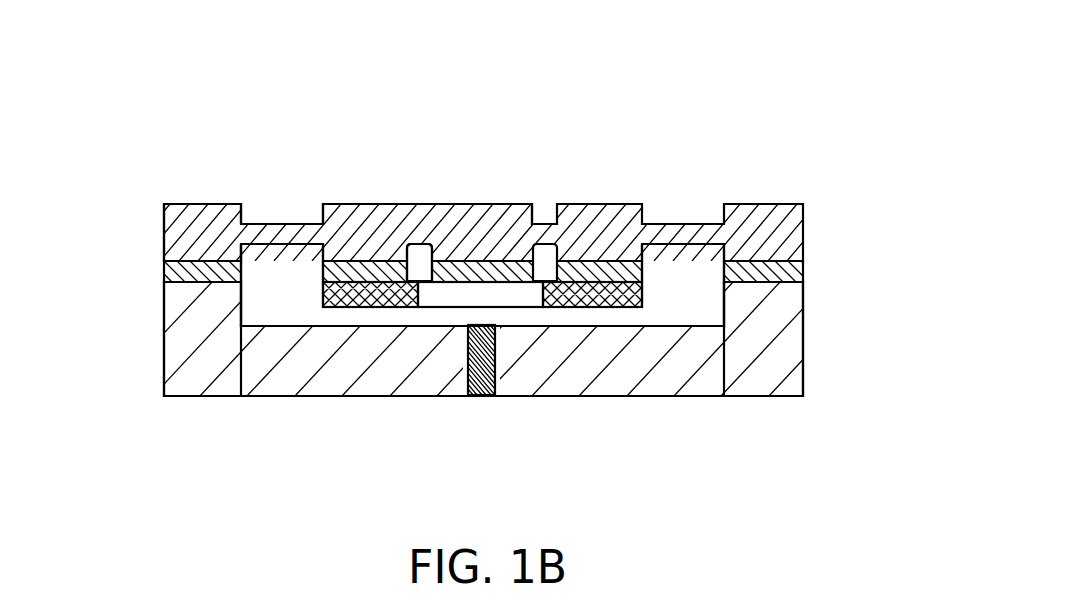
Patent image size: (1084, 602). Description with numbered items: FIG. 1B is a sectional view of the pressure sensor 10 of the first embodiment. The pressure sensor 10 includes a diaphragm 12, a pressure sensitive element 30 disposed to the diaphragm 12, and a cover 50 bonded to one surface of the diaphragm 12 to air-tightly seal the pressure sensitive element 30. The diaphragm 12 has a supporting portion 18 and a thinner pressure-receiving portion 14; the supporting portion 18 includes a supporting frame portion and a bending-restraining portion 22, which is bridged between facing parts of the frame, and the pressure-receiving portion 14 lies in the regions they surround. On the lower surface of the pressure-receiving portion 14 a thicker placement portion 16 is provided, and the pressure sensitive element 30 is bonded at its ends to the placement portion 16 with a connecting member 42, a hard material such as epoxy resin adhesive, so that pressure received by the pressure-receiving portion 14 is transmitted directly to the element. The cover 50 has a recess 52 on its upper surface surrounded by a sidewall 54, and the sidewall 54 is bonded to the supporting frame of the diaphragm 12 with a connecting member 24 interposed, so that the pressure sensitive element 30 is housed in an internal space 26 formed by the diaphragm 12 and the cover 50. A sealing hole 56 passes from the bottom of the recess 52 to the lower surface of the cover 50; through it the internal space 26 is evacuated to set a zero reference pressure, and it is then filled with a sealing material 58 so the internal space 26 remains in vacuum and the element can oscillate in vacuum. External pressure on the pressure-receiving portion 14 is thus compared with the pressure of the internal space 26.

The pressure sensor 10 is at (513, 118).
The diaphragm 12 is at (473, 204).
The pressure-receiving portion 14 is at (278, 223).
The placement portion 16 is at (413, 243).
The supporting portion 18 is at (197, 203).
The bending-restraining portion 22 is at (432, 258).
The connecting member 24 is at (165, 276).
The internal space 26 is at (653, 313).
The pressure sensitive element 30 is at (509, 312).
The connecting member 42 is at (323, 282).
The cover 50 is at (253, 397).
The recess 52 is at (279, 325).
The sidewall 54 is at (180, 300).
The sealing hole 56 is at (469, 351).
The sealing material 58 is at (483, 388).